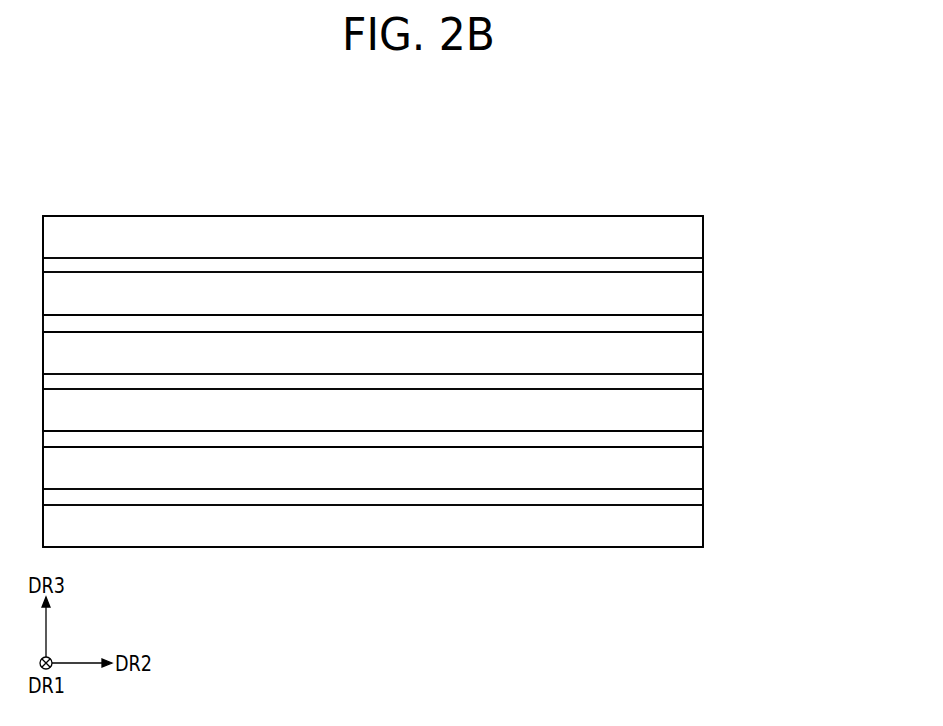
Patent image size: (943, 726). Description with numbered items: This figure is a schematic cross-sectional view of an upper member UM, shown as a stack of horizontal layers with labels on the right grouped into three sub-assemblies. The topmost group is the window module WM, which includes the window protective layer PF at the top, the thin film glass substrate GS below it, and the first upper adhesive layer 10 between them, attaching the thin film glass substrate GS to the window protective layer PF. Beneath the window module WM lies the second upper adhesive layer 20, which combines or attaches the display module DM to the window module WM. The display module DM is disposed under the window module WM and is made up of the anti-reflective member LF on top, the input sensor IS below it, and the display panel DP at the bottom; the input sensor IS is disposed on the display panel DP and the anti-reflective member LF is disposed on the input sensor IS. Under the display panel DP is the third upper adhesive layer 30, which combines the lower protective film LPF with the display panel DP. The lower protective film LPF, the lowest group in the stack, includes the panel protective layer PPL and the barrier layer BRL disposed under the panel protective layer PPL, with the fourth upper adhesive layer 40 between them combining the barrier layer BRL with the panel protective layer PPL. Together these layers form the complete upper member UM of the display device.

The upper member UM is at (683, 164).
The window protective layer PF is at (692, 230).
The first upper adhesive layer 10 is at (692, 261).
The thin film glass substrate GS is at (692, 295).
The second upper adhesive layer 20 is at (692, 323).
The anti-reflective member LF is at (692, 347).
The input sensor IS is at (692, 381).
The display panel DP is at (692, 411).
The third upper adhesive layer 30 is at (692, 438).
The panel protective layer PPL is at (692, 463).
The fourth upper adhesive layer 40 is at (692, 495).
The barrier layer BRL is at (692, 531).
The window module WM is at (773, 218).
The display module DM is at (773, 336).
The lower protective film LPF is at (785, 451).